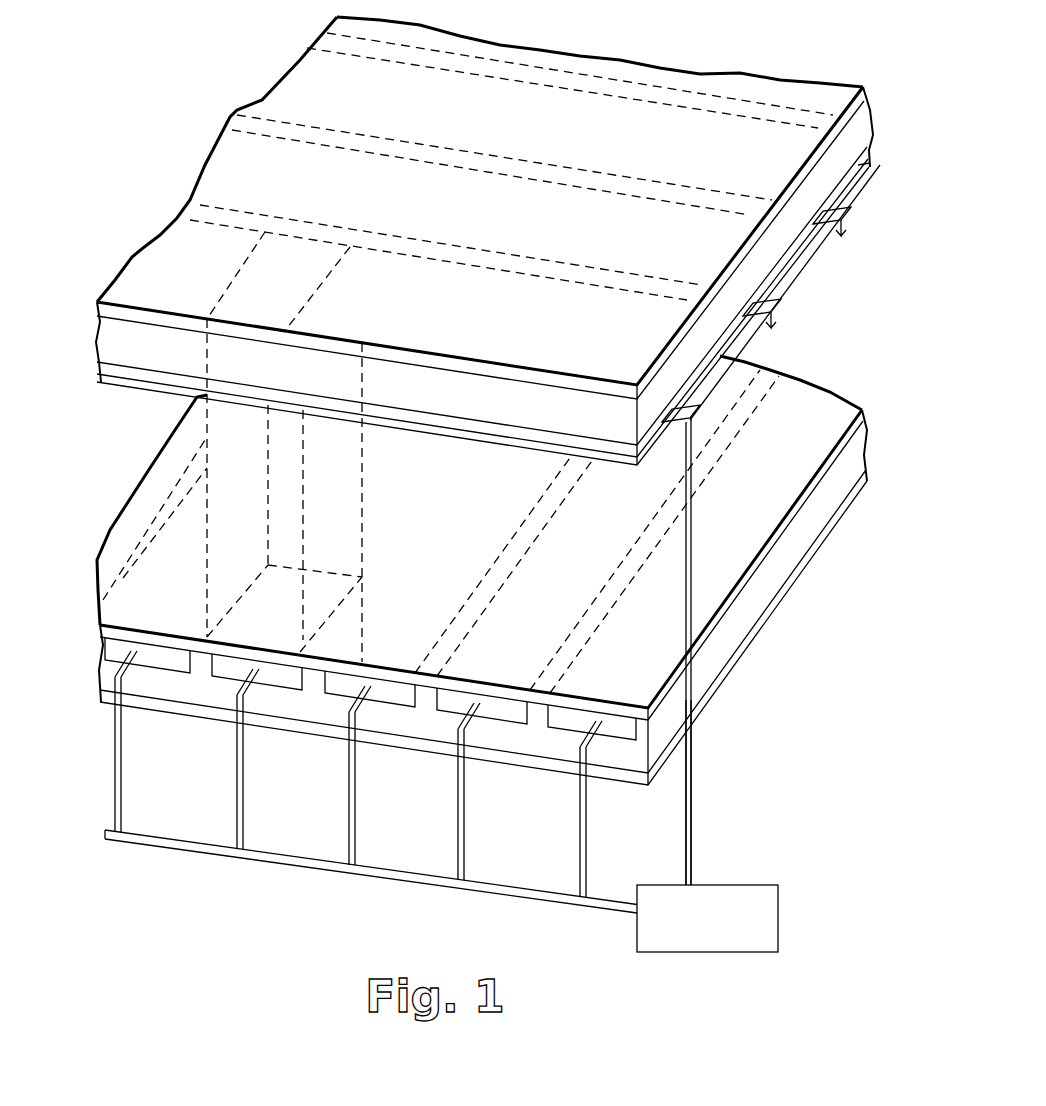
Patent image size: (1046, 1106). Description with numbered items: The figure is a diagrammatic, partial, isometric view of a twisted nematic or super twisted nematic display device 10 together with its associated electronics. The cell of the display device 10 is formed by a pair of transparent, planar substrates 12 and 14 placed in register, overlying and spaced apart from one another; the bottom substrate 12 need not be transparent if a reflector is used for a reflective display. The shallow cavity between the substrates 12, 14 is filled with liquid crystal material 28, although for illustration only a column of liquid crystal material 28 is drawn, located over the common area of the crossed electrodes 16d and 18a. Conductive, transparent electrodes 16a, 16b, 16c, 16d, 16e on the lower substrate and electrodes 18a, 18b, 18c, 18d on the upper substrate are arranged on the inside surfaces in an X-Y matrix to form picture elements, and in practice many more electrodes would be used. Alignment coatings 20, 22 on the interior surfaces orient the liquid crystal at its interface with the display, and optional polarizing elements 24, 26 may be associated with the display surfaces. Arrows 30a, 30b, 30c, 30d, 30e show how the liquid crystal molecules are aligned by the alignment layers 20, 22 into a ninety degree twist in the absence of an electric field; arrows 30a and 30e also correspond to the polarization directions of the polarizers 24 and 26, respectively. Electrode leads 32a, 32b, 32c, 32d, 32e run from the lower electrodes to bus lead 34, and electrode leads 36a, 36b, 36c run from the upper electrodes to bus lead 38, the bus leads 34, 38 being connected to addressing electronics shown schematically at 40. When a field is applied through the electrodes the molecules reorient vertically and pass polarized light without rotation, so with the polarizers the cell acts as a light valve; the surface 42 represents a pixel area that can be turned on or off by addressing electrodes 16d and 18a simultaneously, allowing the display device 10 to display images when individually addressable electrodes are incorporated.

The display device 10 is at (222, 95).
The substrate 12 is at (106, 676).
The substrate 14 is at (101, 346).
The electrode 16a is at (622, 726).
The electrode 16b is at (503, 716).
The electrode 16c is at (391, 698).
The electrode 16d is at (287, 672).
The electrode 16e is at (103, 639).
The electrode 18a is at (660, 440).
The electrode 18b is at (775, 316).
The electrode 18c is at (843, 224).
The electrode 18d is at (872, 154).
The alignment coating 20 is at (101, 628).
The alignment coating 22 is at (128, 386).
The polarizing element 24 is at (104, 704).
The polarizing element 26 is at (100, 302).
The liquid crystal material 28 is at (205, 592).
The arrow 30a is at (300, 624).
The arrow 30b is at (298, 556).
The arrow 30c is at (284, 500).
The arrow 30d is at (310, 437).
The arrow 30e is at (303, 374).
The electrode lead 32a is at (587, 838).
The electrode lead 32b is at (465, 831).
The electrode lead 32c is at (356, 823).
The electrode lead 32d is at (244, 808).
The electrode lead 32e is at (122, 800).
The bus lead 34 is at (388, 875).
The electrode lead 36a is at (695, 445).
The electrode lead 36b is at (774, 330).
The electrode lead 36c is at (843, 238).
The bus lead 38 is at (692, 801).
The addressing electronics 40 is at (745, 895).
The surface 42 is at (511, 182).